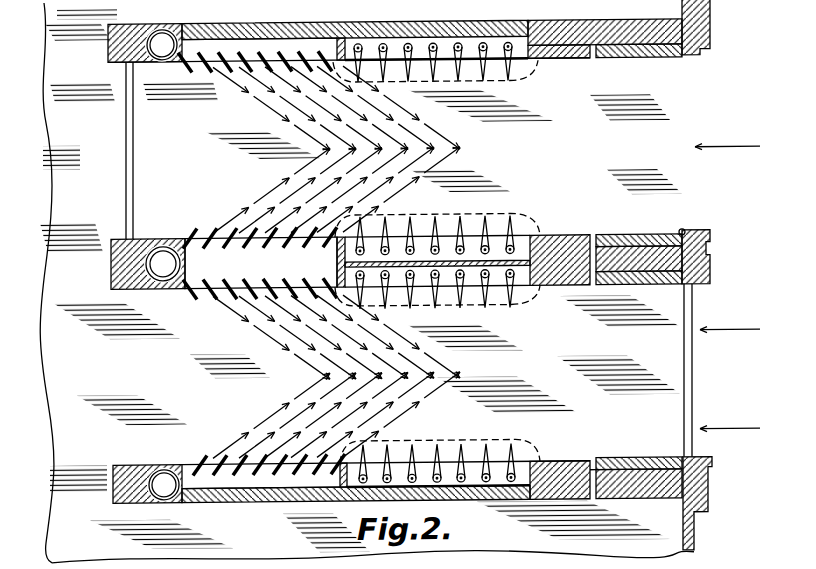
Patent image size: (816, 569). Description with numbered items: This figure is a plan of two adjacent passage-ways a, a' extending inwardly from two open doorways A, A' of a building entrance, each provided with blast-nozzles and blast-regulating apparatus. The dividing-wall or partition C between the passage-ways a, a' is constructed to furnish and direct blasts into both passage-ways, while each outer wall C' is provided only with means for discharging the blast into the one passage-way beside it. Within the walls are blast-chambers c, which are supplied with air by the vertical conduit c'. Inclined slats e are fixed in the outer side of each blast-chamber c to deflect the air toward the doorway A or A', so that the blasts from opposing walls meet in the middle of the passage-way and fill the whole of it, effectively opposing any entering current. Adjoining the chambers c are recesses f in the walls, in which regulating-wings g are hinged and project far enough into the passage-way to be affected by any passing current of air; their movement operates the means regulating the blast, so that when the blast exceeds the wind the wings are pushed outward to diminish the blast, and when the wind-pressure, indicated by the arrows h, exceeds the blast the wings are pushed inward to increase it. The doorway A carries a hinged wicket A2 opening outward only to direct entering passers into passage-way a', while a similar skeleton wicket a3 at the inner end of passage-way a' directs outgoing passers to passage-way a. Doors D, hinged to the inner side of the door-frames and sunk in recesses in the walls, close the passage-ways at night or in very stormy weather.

The doorway A is at (367, 282).
The doorway A' is at (712, 275).
The hinged wicket A2 is at (686, 362).
The passage-way a is at (404, 376).
The passage-way a' is at (396, 149).
The wicket a3 is at (126, 155).
The dividing-wall or partition C is at (377, 262).
The outer wall C' is at (377, 261).
The blast-chamber c is at (261, 263).
The vertical conduit c' is at (156, 265).
The door D is at (639, 61).
The inclined slats e is at (229, 234).
The recess f is at (396, 50).
The regulating-wing g is at (503, 84).
The arrows indicating wind-pressure h is at (727, 287).